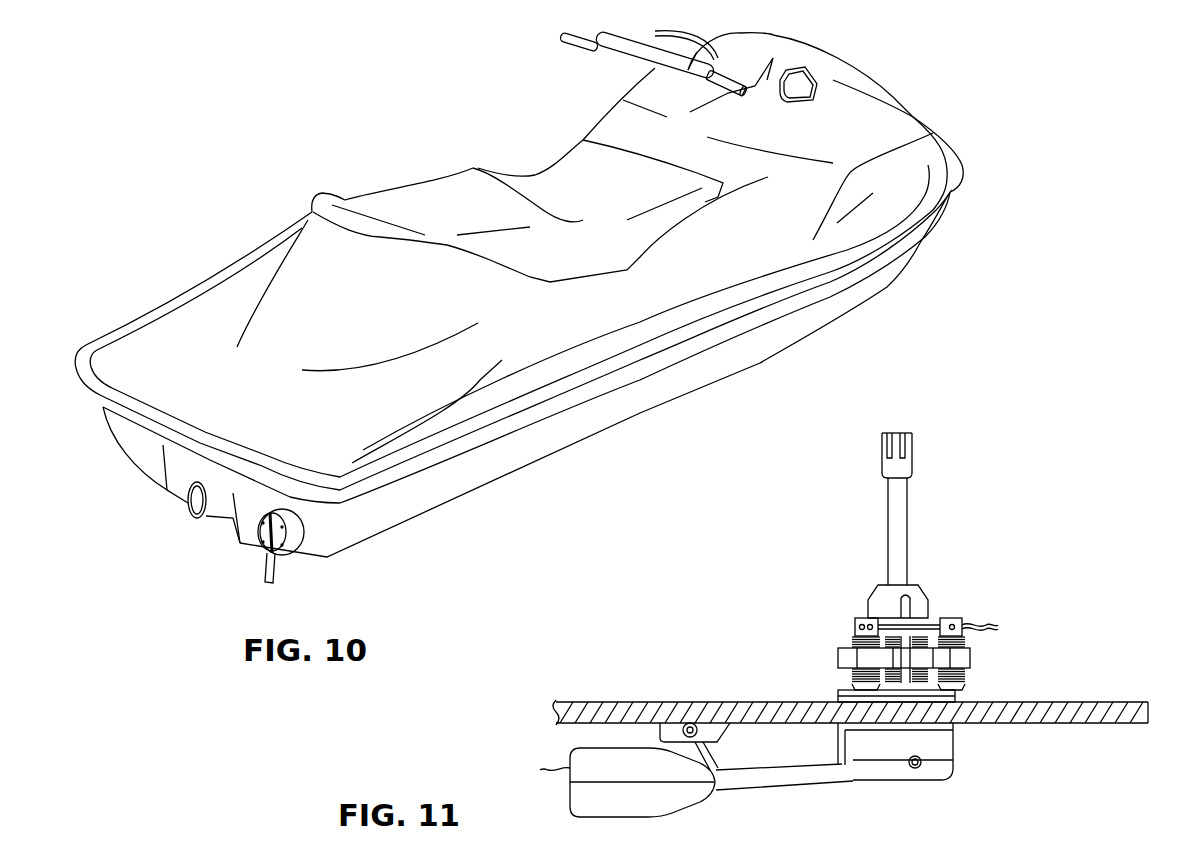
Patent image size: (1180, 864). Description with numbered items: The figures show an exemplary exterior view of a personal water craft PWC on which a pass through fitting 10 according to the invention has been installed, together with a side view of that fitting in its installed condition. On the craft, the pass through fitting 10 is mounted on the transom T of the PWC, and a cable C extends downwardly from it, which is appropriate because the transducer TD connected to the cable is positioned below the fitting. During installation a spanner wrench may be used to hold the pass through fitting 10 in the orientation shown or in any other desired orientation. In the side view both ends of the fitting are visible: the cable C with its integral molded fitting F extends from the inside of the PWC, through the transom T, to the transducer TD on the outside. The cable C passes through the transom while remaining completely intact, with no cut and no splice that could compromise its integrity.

In FIG. 10, the personal water craft PWC is at (322, 150).
In FIG. 10, the pass through fitting 10 is at (225, 569).
In FIG. 11, the pass through fitting 10 is at (829, 638).
In FIG. 10, the cable C is at (278, 568).
In FIG. 11, the cable C is at (888, 545).
In FIG. 11, the integral molded fitting F is at (882, 450).
In FIG. 11, the transom T is at (1050, 700).
In FIG. 11, the transducer TD is at (570, 768).